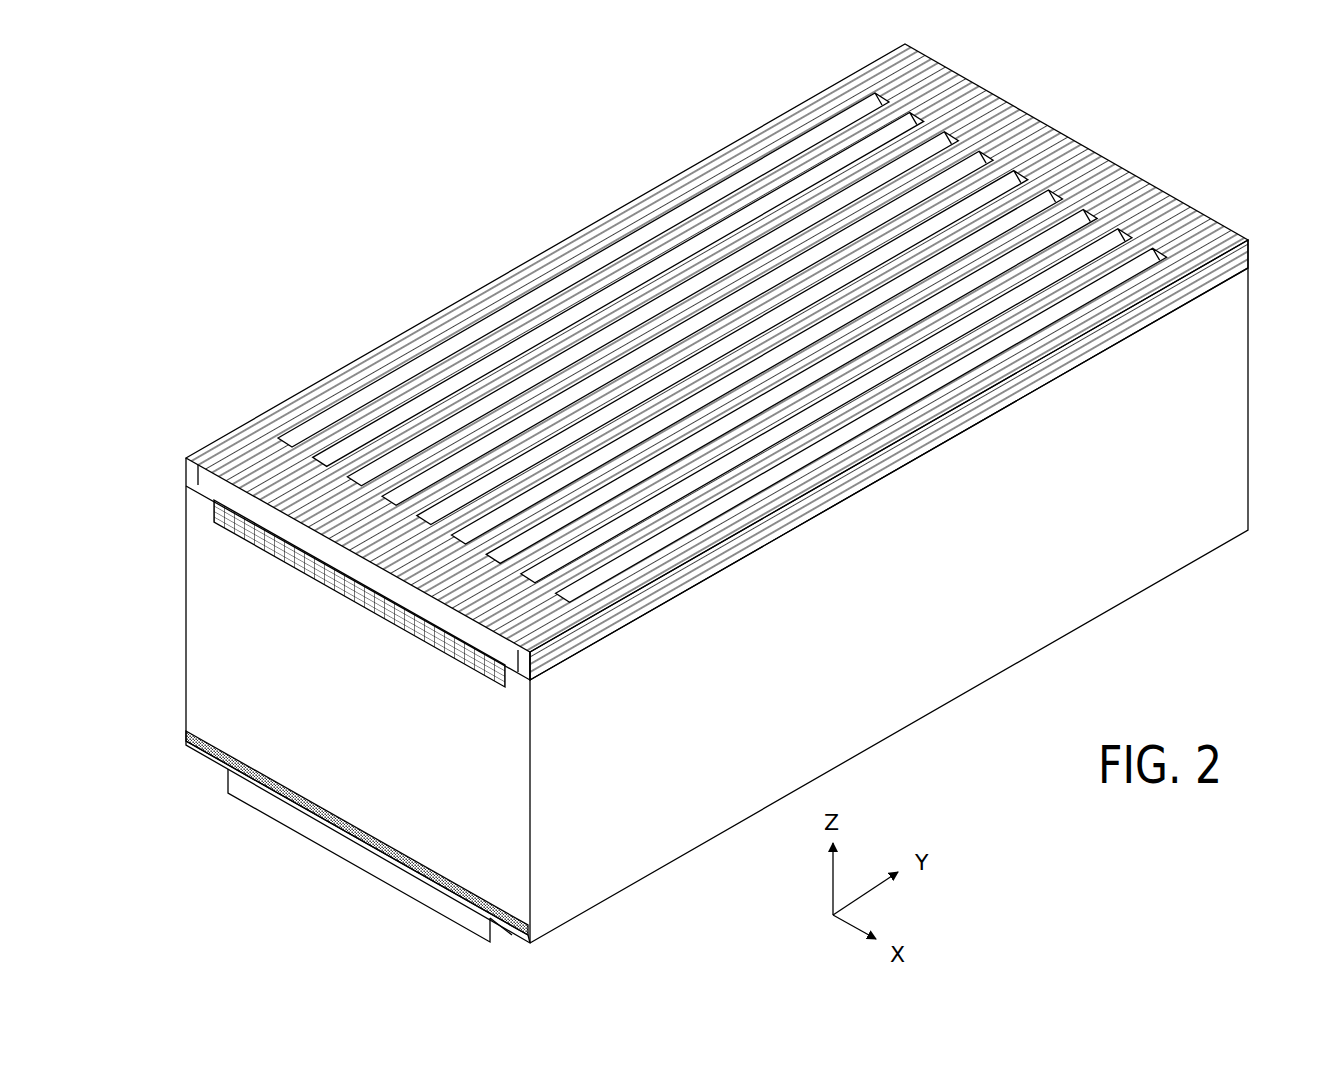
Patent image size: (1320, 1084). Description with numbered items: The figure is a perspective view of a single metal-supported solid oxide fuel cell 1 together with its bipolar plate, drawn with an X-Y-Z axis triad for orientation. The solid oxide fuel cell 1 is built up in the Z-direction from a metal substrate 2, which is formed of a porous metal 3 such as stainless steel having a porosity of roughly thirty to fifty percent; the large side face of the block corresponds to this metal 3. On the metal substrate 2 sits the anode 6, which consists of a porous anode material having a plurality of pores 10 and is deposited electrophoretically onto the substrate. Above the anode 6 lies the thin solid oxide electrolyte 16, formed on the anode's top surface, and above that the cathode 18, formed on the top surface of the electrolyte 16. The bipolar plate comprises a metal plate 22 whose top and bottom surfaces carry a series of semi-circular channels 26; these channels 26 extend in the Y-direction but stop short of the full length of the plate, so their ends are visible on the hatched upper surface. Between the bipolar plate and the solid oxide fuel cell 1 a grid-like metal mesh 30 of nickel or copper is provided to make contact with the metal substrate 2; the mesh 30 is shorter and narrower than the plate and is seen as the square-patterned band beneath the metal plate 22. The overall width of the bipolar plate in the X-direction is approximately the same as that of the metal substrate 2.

The solid oxide fuel cell 1 is at (203, 376).
The metal substrate 2 is at (186, 628).
The metal 3 is at (1225, 410).
The anode 6 is at (186, 733).
The pores 10 is at (332, 842).
The electrolyte 16 is at (186, 742).
The cathode 18 is at (228, 780).
The metal plate 22 is at (336, 388).
The semi-circular channels 26 is at (508, 318).
The metal mesh 30 is at (214, 506).